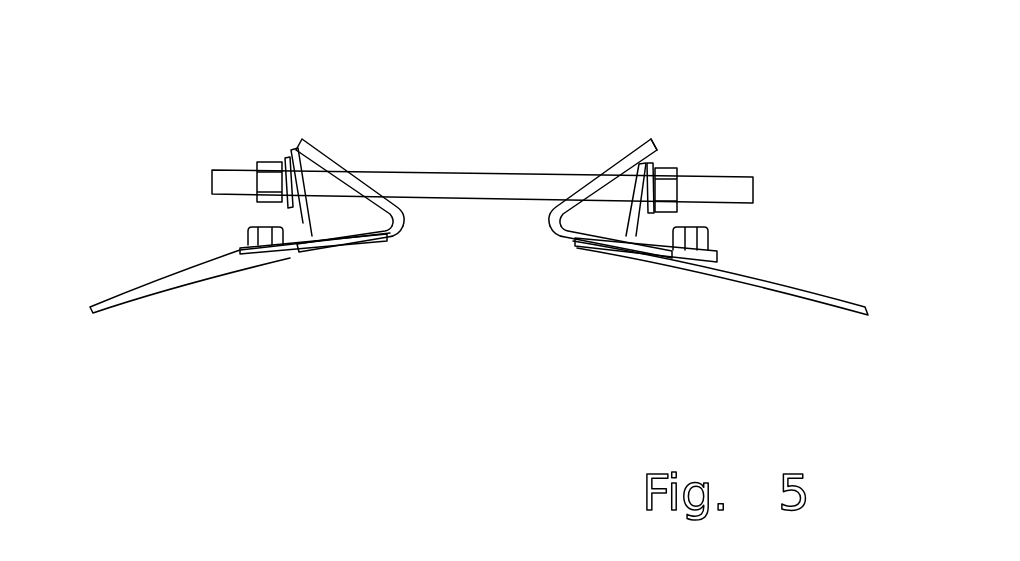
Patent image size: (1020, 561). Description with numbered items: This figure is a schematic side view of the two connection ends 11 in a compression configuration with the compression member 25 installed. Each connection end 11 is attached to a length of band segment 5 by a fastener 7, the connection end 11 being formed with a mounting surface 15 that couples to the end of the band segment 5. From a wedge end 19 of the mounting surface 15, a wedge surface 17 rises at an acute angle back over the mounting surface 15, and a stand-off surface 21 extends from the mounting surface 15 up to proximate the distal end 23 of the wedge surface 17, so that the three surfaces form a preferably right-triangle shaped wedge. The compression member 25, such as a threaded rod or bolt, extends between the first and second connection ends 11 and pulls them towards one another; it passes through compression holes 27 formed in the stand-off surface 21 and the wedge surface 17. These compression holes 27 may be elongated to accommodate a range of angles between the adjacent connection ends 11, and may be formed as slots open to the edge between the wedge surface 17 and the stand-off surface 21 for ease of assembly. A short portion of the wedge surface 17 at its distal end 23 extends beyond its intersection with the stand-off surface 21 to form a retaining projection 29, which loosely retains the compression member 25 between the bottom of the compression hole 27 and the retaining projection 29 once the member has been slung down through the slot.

The band segment 5 is at (777, 280).
The fastener 7 is at (687, 243).
The connection end 11 is at (553, 226).
The mounting surface 15 is at (303, 224).
The wedge surface 17 is at (620, 163).
The wedge end 19 is at (399, 232).
The stand-off surface 21 is at (305, 220).
The distal end 23 is at (655, 140).
The compression member 25 is at (535, 188).
The compression hole 27 is at (348, 170).
The retaining projection 29 is at (654, 145).